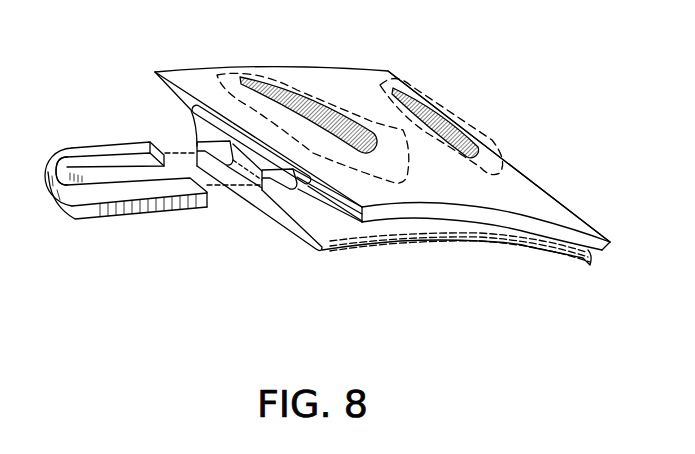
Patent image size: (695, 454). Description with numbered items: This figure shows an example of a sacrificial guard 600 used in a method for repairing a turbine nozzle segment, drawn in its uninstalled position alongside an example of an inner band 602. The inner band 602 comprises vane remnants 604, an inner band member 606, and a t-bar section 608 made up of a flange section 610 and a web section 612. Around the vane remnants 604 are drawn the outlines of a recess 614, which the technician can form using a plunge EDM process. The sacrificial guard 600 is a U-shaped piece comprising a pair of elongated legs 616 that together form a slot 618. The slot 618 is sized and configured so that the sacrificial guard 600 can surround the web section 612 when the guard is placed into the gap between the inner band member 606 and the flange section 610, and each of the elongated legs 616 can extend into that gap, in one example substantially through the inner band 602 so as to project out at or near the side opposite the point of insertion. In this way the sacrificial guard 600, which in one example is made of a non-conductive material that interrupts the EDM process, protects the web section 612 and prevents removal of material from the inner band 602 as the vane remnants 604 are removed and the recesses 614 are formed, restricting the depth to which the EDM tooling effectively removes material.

The sacrificial guard 600 is at (53, 114).
The inner band 602 is at (578, 183).
The vane remnants 604 is at (390, 87).
The inner band member 606 is at (517, 171).
The t-bar section 608 is at (245, 202).
The flange section 610 is at (293, 235).
The web section 612 is at (250, 204).
The recess 614 is at (400, 184).
The elongated legs 616 is at (151, 191).
The slot 618 is at (94, 182).